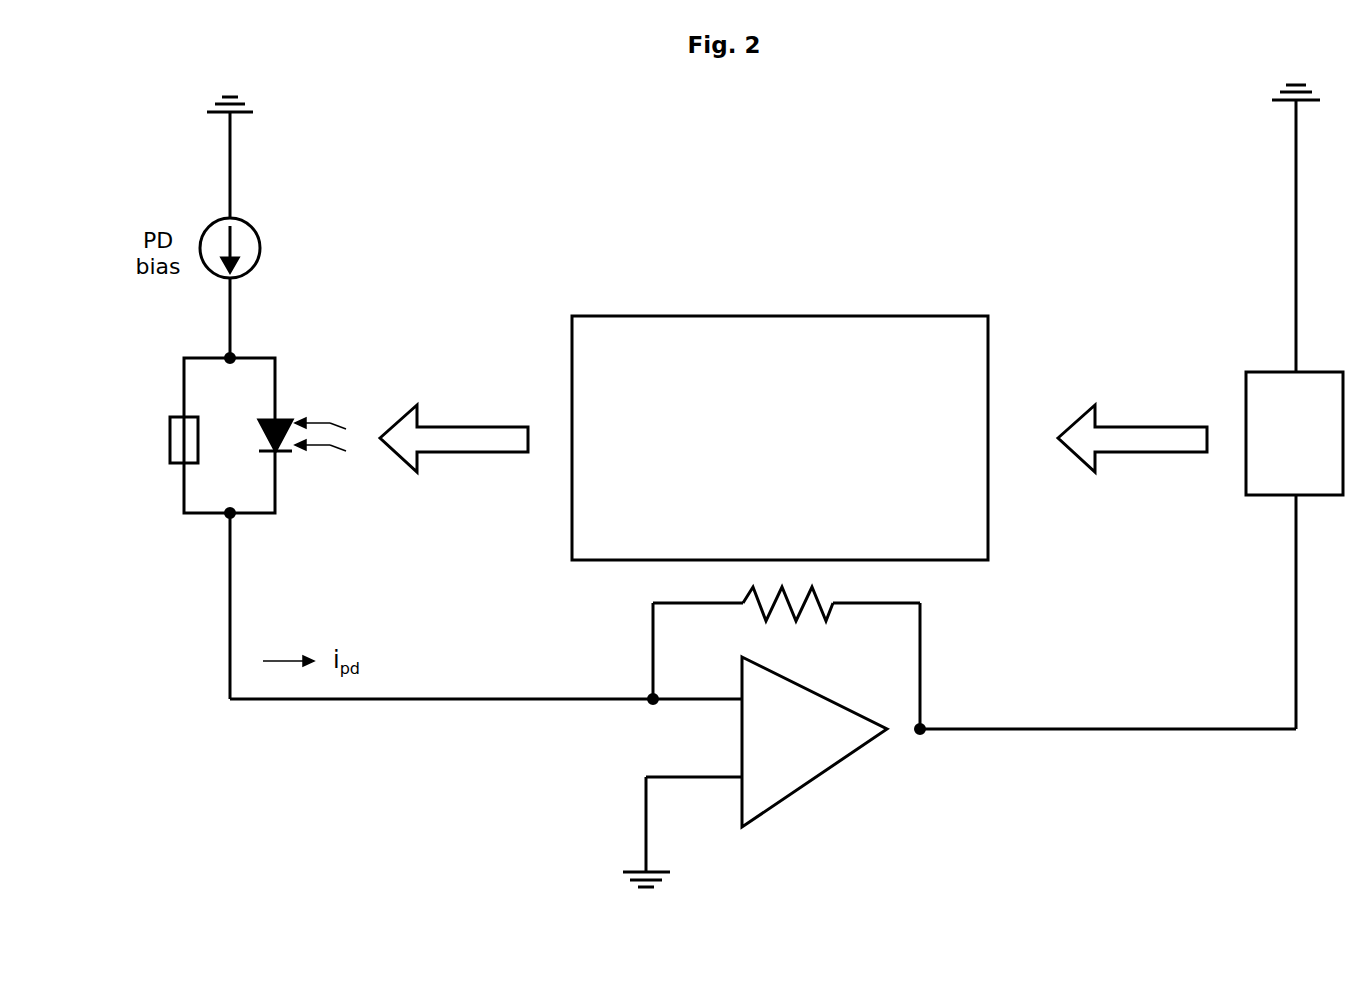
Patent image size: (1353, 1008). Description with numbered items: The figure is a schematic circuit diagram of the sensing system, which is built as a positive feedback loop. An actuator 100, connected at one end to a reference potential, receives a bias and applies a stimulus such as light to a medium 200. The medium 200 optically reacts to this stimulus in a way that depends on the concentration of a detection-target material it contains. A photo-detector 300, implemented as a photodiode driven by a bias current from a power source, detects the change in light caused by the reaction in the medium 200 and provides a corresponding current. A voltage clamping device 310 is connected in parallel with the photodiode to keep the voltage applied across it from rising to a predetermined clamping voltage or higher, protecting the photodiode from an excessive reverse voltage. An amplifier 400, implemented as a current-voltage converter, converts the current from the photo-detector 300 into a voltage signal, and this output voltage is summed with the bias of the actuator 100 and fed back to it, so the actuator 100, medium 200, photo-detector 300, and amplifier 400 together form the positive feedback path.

The actuator 100 is at (1294, 433).
The medium 200 is at (780, 438).
The photo-detector 300 is at (265, 436).
The voltage clamping device 310 is at (170, 438).
The amplifier 400 is at (779, 737).